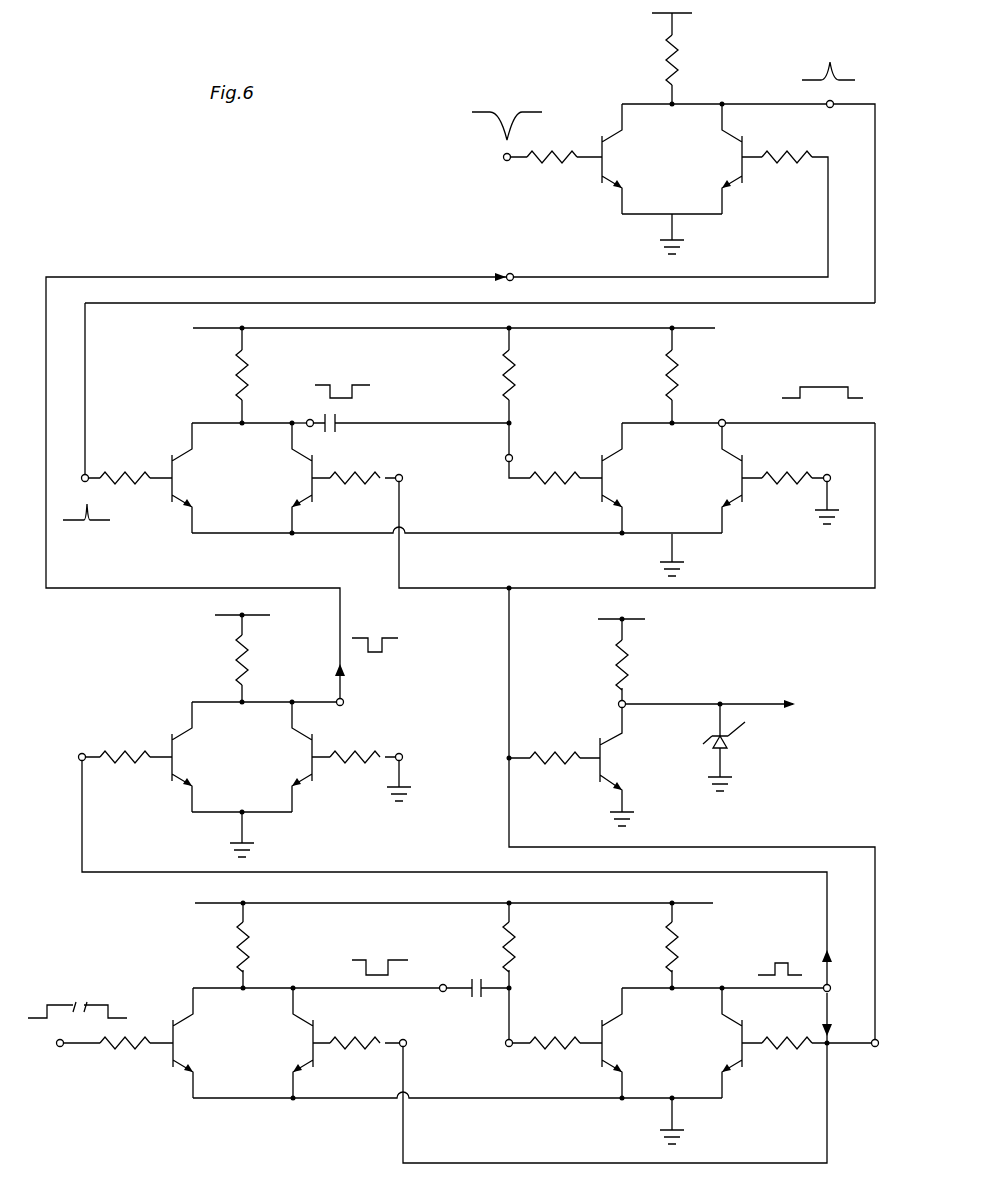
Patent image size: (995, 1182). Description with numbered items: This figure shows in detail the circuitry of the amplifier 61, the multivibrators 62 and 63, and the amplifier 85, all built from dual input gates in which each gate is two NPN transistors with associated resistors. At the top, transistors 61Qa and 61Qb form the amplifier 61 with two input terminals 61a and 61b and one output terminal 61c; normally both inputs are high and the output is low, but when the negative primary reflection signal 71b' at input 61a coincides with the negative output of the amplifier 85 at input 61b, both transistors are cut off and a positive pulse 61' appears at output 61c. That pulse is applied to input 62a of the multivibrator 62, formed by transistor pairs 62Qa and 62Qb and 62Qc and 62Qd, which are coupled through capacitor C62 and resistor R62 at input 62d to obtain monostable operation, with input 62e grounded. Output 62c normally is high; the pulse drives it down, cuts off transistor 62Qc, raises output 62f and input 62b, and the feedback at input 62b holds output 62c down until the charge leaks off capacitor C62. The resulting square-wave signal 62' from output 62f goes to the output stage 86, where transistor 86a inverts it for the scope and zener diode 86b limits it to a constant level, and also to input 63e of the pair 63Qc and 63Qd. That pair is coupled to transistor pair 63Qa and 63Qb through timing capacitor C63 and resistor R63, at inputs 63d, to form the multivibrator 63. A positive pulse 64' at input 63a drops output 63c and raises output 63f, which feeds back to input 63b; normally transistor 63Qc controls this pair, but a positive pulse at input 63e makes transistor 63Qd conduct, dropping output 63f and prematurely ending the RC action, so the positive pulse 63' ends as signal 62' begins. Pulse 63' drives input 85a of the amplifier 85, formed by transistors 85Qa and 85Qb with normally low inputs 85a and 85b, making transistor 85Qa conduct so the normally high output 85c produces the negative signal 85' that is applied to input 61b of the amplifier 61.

The amplifier 61 is at (460, 355).
The output pulse of amplifier 61' is at (838, 65).
The input terminal of amplifier 61a is at (506, 162).
The input terminal of amplifier 61b is at (514, 274).
The output terminal of amplifier 61c is at (829, 108).
The transistor 61Qa is at (672, 159).
The transistor 61Qb is at (753, 136).
The primary reflection signal 71b' is at (486, 129).
The multivibrator 62 is at (469, 447).
The square-wave signal 62' is at (822, 377).
The input of multivibrator 62a is at (87, 474).
The input of multivibrator 62b is at (402, 478).
The output of multivibrator 62c is at (309, 420).
The input of transistor pair 62d is at (513, 461).
The input of transistor pair 62e is at (836, 462).
The output of multivibrator 62f is at (733, 410).
The transistor 62Qa is at (242, 478).
The transistor 62Qb is at (280, 455).
The transistor 62Qc is at (672, 478).
The transistor 62Qd is at (777, 456).
The resistor R62 is at (532, 391).
The capacitor C62 is at (411, 436).
The amplifier 85 is at (434, 801).
The output signal of amplifier 85' is at (389, 657).
The input terminal of amplifier 85a is at (80, 753).
The input terminal of amplifier 85b is at (404, 757).
The output terminal of amplifier 85c is at (345, 702).
The transistor 85Qa is at (242, 757).
The transistor 85Qb is at (296, 734).
The output stage 86 is at (691, 816).
The transistor 86a is at (617, 704).
The zener diode 86b is at (732, 744).
The multivibrator 63 is at (453, 1032).
The positive pulse 63' is at (765, 954).
The input of multivibrator 63a is at (61, 1047).
The input of multivibrator 63b is at (407, 1046).
The output of multivibrator 63c is at (440, 992).
The input of transistor pair 63d is at (507, 1048).
The input of transistor pair 63e is at (877, 1051).
The output of multivibrator 63f is at (823, 996).
The transistor 63Qa is at (243, 1043).
The transistor 63Qb is at (347, 1020).
The transistor 63Qc is at (672, 1043).
The transistor 63Qd is at (755, 1021).
The resistor R63 is at (532, 971).
The capacitor C63 is at (473, 976).
The positive pulse 64' is at (77, 996).